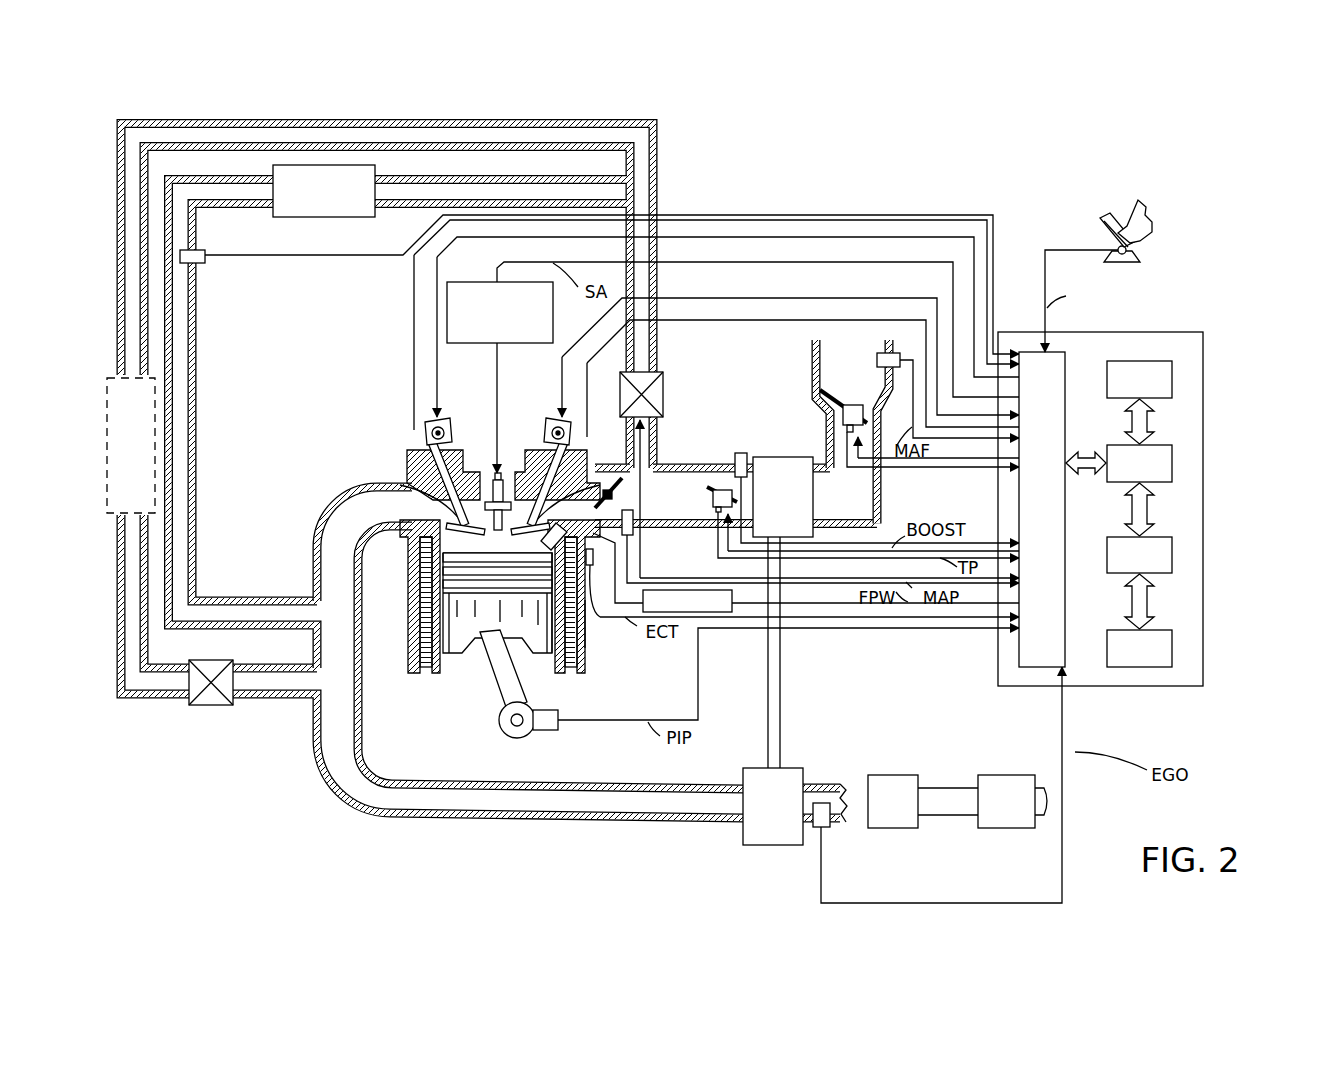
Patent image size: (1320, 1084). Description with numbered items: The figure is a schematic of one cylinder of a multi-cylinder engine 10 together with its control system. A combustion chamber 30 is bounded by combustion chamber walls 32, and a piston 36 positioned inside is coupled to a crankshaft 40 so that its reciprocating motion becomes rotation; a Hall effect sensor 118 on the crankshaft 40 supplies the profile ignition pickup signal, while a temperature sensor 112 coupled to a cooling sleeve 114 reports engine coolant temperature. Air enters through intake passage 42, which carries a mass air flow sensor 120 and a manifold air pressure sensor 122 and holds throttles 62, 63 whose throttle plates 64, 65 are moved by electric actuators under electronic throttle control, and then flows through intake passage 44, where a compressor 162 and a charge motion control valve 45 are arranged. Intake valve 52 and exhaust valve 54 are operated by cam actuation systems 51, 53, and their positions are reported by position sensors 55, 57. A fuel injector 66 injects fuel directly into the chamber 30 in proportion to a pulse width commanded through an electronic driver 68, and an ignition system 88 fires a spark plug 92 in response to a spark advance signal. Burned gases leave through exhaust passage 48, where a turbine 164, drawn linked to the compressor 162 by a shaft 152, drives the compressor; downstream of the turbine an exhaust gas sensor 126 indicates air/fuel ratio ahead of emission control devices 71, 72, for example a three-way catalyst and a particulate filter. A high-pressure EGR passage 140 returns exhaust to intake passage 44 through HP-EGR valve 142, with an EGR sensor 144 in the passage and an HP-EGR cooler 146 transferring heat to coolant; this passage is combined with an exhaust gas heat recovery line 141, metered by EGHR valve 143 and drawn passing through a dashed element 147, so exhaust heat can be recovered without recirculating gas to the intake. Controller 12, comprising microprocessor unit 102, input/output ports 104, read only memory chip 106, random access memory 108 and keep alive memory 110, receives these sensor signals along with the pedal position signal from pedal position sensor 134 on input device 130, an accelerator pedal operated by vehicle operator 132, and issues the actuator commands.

The engine 10 is at (345, 405).
The controller 12 is at (1139, 497).
The combustion chamber 30 is at (412, 632).
The combustion chamber walls 32 is at (442, 662).
The piston 36 is at (483, 630).
The crankshaft 40 is at (505, 736).
The intake passage 42 is at (852, 432).
The intake passage 44 is at (736, 496).
The charge motion control valve 45 is at (612, 483).
The exhaust passage 48 is at (530, 638).
The cam actuation system 51 is at (554, 418).
The intake valve 52 is at (540, 520).
The cam actuation system 53 is at (446, 418).
The exhaust valve 54 is at (413, 470).
The position sensor 55 is at (572, 444).
The position sensor 57 is at (430, 445).
The throttle 62 is at (706, 490).
The throttle 63 is at (818, 393).
The throttle plate 64 is at (854, 524).
The throttle plate 65 is at (842, 416).
The fuel injector 66 is at (541, 541).
The electronic driver 68 is at (733, 597).
The emission control device 71 is at (923, 801).
The emission control device 72 is at (1012, 801).
The ignition system 88 is at (455, 282).
The spark plug 92 is at (504, 478).
The microprocessor unit 102 is at (1172, 460).
The input/output ports 104 is at (1067, 358).
The read only memory chip 106 is at (1172, 378).
The random access memory 108 is at (1172, 550).
The keep alive memory 110 is at (1172, 643).
The temperature sensor 112 is at (594, 585).
The cooling sleeve 114 is at (586, 648).
The Hall effect sensor 118 is at (549, 732).
The mass air flow sensor 120 is at (893, 353).
The manifold air pressure sensor 122 is at (634, 530).
The exhaust gas sensor 126 is at (829, 827).
The input device 130 is at (1152, 269).
The vehicle operator 132 is at (1147, 210).
The pedal position sensor 134 is at (1130, 253).
The high-pressure EGR passage 140 is at (245, 597).
The exhaust gas heat recovery line 141 is at (133, 699).
The HP-EGR valve 142 is at (664, 375).
The EGHR valve 143 is at (213, 706).
The EGR sensor 144 is at (205, 262).
The HP-EGR cooler 146 is at (324, 191).
The EGR cooler 147 is at (131, 445).
The turbine shaft 152 is at (817, 770).
The compressor 162 is at (877, 498).
The turbine 164 is at (773, 806).